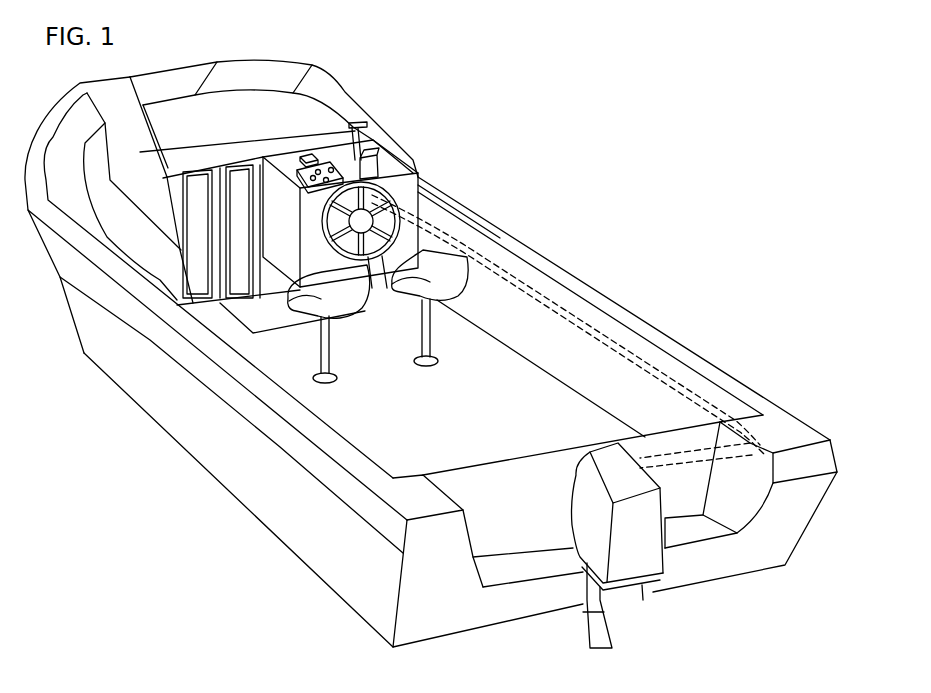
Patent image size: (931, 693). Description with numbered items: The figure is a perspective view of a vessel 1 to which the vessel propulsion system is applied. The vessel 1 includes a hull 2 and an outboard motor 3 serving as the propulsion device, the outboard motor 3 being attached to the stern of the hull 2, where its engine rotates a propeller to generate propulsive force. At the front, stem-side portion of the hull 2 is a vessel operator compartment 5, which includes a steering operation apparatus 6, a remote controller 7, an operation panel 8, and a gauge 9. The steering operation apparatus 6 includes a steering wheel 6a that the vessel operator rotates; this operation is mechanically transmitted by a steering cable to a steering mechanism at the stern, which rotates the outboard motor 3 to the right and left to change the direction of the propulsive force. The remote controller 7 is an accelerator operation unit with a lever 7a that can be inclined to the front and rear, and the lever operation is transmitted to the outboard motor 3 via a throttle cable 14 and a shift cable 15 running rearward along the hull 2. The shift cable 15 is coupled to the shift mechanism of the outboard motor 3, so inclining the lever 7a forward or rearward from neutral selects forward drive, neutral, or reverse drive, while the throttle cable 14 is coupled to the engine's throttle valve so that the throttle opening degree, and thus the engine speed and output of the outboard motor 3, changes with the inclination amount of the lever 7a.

The vessel 1 is at (200, 520).
The hull 2 is at (668, 345).
The outboard motor 3 is at (637, 560).
The vessel operator compartment 5 is at (423, 204).
The steering operation apparatus 6 is at (402, 234).
The steering wheel 6a is at (370, 262).
The remote controller 7 is at (375, 156).
The lever 7a is at (360, 122).
The operation panel 8 is at (299, 176).
The gauge 9 is at (307, 154).
The throttle cable 14 is at (568, 306).
The shift cable 15 is at (603, 336).